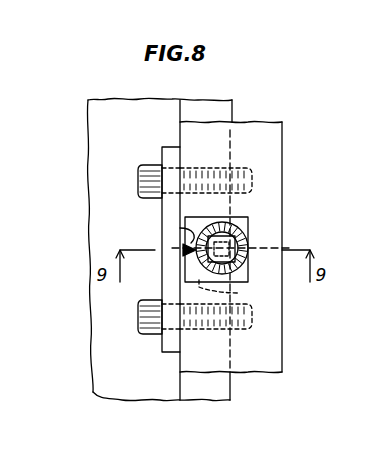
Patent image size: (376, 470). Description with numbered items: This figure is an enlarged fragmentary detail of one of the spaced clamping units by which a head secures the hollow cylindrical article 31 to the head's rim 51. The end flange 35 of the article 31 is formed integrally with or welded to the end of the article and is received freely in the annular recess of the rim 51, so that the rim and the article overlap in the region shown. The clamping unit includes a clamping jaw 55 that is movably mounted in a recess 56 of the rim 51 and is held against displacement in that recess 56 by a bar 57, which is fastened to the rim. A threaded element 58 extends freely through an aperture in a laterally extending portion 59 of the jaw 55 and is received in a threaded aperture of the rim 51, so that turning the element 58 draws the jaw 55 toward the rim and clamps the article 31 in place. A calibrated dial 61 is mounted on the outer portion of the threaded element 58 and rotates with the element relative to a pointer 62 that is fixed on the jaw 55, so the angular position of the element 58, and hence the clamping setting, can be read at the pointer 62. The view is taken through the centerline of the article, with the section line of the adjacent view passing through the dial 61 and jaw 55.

The article 31 is at (90, 216).
The rim 51 is at (283, 344).
The end flange 35 is at (231, 401).
The bar 57 is at (162, 156).
The clamping jaw 55 is at (183, 277).
The calibrated dial 61 is at (243, 231).
The threaded element 58 is at (230, 236).
The laterally extending portion 59 is at (245, 268).
The recess 56 is at (230, 291).
The pointer 62 is at (180, 228).